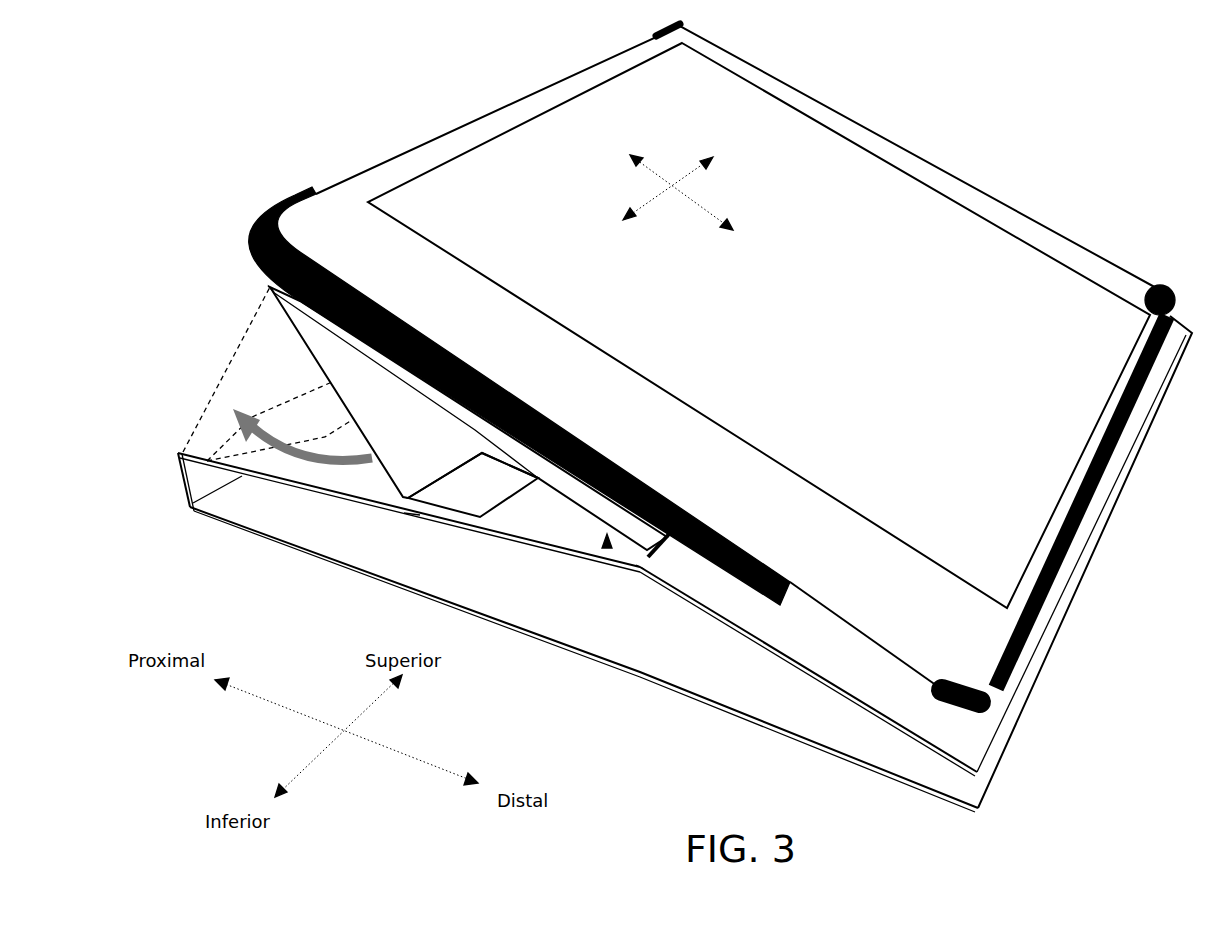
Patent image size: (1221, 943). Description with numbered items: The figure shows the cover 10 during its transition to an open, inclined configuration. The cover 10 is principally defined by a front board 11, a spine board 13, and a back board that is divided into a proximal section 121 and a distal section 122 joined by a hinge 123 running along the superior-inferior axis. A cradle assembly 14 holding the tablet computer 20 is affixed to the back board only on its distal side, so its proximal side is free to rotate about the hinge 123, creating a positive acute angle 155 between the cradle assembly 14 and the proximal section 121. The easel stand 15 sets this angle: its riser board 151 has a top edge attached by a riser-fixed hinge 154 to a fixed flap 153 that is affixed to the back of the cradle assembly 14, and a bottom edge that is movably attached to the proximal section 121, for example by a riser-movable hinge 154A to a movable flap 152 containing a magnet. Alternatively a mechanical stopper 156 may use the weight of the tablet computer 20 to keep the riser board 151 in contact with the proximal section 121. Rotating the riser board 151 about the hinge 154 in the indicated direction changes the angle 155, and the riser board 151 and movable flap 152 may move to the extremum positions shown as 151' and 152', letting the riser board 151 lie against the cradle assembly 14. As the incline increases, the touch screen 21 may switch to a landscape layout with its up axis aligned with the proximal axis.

The cover 10 is at (890, 58).
The front board 11 is at (600, 676).
The spine board 13 is at (172, 487).
The cradle assembly 14 is at (276, 198).
The easel stand 15 is at (384, 468).
The tablet computer 20 is at (942, 162).
The touch screen 21 is at (759, 325).
The proximal section 121 is at (510, 538).
The distal section 122 is at (722, 630).
The hinge 123 is at (672, 548).
The riser board 151 is at (468, 418).
The riser board extremum position 151' is at (225, 369).
The movable flap 152 is at (473, 485).
The movable flap extremum position 152' is at (279, 452).
The fixed flap 153 is at (562, 492).
The riser-fixed hinge 154 is at (268, 284).
The riser-movable hinge 154A is at (413, 524).
The angle 155 is at (614, 562).
The mechanical stopper 156 is at (270, 402).